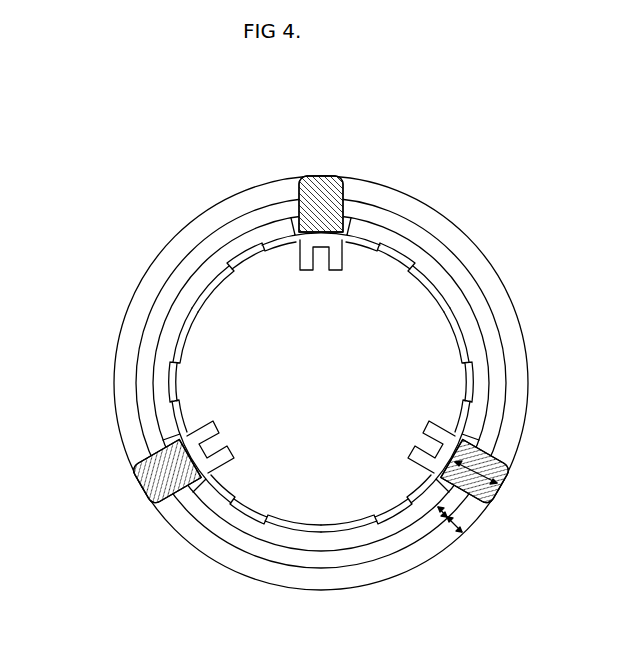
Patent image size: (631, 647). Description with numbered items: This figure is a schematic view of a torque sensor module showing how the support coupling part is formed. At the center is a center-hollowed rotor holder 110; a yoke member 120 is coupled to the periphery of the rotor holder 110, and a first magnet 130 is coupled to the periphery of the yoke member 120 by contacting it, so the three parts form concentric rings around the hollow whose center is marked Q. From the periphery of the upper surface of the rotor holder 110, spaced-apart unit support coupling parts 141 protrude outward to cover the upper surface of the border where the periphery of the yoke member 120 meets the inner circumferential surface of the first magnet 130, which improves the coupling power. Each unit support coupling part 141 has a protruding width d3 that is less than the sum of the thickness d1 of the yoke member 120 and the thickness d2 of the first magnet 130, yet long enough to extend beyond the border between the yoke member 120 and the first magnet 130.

The rotor holder 110 is at (184, 302).
The yoke member 120 is at (143, 342).
The first magnet 130 is at (114, 372).
The unit support coupling part 141 is at (326, 178).
The thickness of the yoke member d1 is at (438, 515).
The thickness of the first magnet d2 is at (467, 518).
The protruding width of the unit support coupling part d3 is at (507, 462).
The center point Q is at (321, 394).